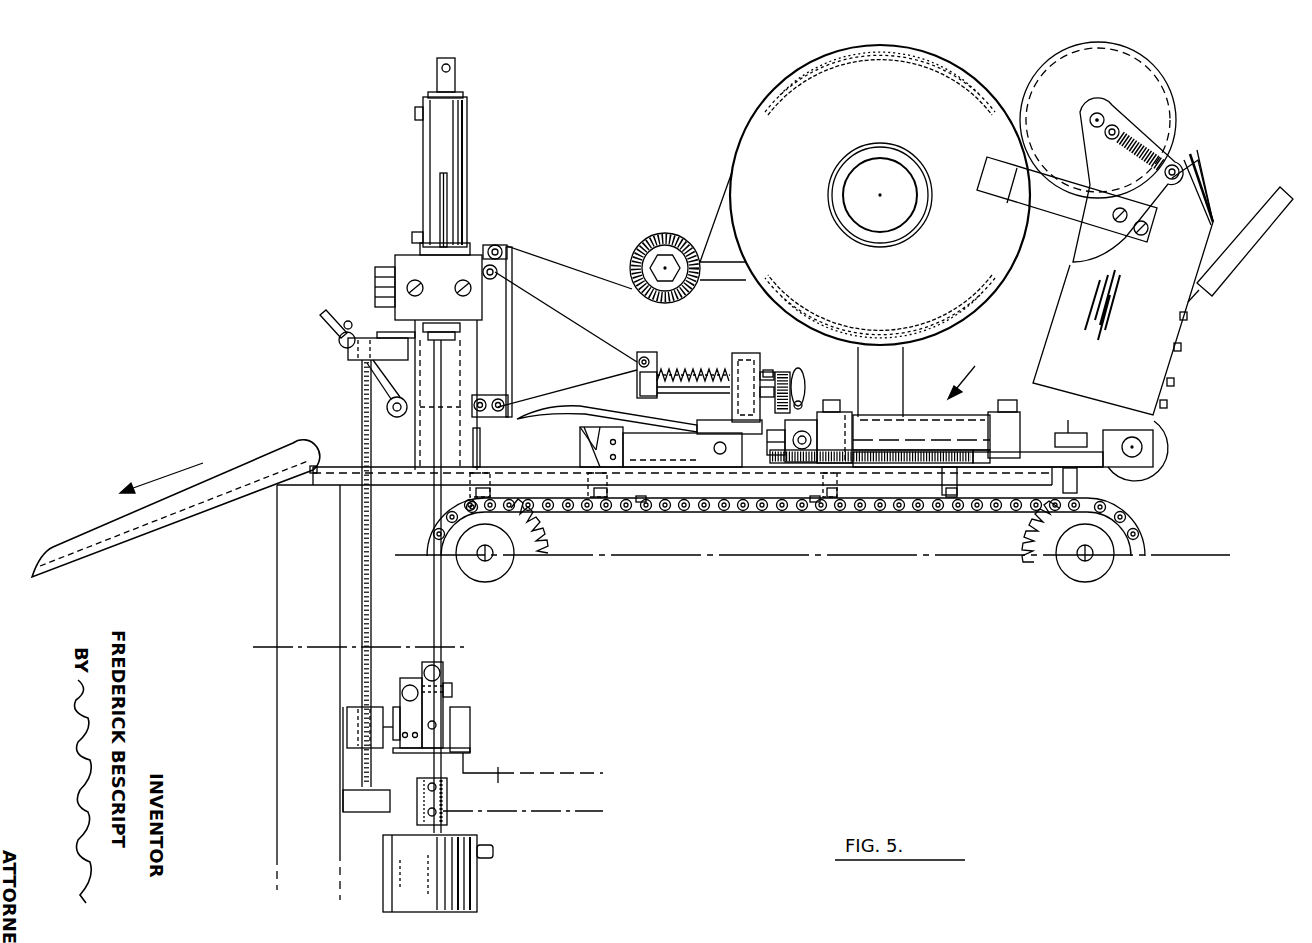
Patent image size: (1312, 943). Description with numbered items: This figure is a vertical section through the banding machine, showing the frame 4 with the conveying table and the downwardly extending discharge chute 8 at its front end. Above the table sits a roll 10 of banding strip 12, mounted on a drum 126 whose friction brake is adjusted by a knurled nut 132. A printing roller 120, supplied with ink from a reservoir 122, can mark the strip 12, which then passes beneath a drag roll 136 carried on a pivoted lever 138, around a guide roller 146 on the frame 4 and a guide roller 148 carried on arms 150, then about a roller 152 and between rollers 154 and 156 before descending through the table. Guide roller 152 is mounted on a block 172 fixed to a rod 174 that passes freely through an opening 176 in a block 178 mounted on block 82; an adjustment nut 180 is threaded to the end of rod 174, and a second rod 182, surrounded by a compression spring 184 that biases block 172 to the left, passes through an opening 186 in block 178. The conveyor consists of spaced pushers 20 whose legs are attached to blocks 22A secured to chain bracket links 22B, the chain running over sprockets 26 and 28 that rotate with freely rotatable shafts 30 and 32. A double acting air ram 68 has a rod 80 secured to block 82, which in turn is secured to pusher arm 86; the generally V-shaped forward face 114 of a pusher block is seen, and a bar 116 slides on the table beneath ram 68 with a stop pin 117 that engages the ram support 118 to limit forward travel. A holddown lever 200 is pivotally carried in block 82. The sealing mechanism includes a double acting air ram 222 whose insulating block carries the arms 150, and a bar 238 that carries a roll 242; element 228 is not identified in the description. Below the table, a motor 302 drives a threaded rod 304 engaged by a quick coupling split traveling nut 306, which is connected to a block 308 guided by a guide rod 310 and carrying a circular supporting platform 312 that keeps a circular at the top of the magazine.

The frame 4 is at (420, 441).
The discharge chute 8 is at (204, 503).
The roll 10 is at (896, 121).
The strip of banding material 12 is at (598, 276).
The pusher 20 is at (482, 438).
The block 22A is at (641, 503).
The chain bracket links 22B is at (600, 512).
The sprocket 26 is at (1048, 550).
The sprocket 28 is at (527, 555).
The shaft 30 is at (1086, 556).
The shaft 32 is at (485, 557).
The double acting air ram 68 is at (969, 372).
The rod 80 is at (768, 437).
The block 82 is at (720, 430).
The pusher arm 86 is at (680, 465).
The forward face 114 is at (583, 433).
The bar 116 is at (768, 465).
The stop pin 117 is at (967, 500).
The ram support 118 is at (918, 431).
The printing roller 120 is at (1100, 84).
The reservoir 122 is at (1193, 253).
The drum 126 is at (912, 165).
The knurled nut 132 is at (857, 189).
The drag roll 136 is at (665, 230).
The lever 138 is at (725, 270).
The guide roller 146 is at (501, 249).
The guide roller 148 is at (498, 273).
The arms 150 is at (485, 281).
The guide roller 152 is at (650, 347).
The roller 154 is at (493, 398).
The roller 156 is at (483, 399).
The block 172 is at (640, 393).
The rod 174 is at (690, 391).
The opening 176 is at (753, 396).
The block 178 is at (757, 362).
The adjustment nut 180 is at (796, 372).
The rod 182 is at (676, 368).
The compression spring 184 is at (705, 368).
The opening 186 is at (745, 355).
The holddown lever 200 is at (585, 412).
The double acting air ram 222 is at (470, 147).
The piston rod 228 is at (447, 195).
The bar 238 is at (345, 352).
The roll 242 is at (386, 410).
The motor 302 is at (458, 876).
The threaded rod 304 is at (433, 530).
The quick coupling split traveling nut 306 is at (468, 682).
The block 308 is at (466, 718).
The guide rod 310 is at (361, 612).
The circular supporting platform 312 is at (487, 770).